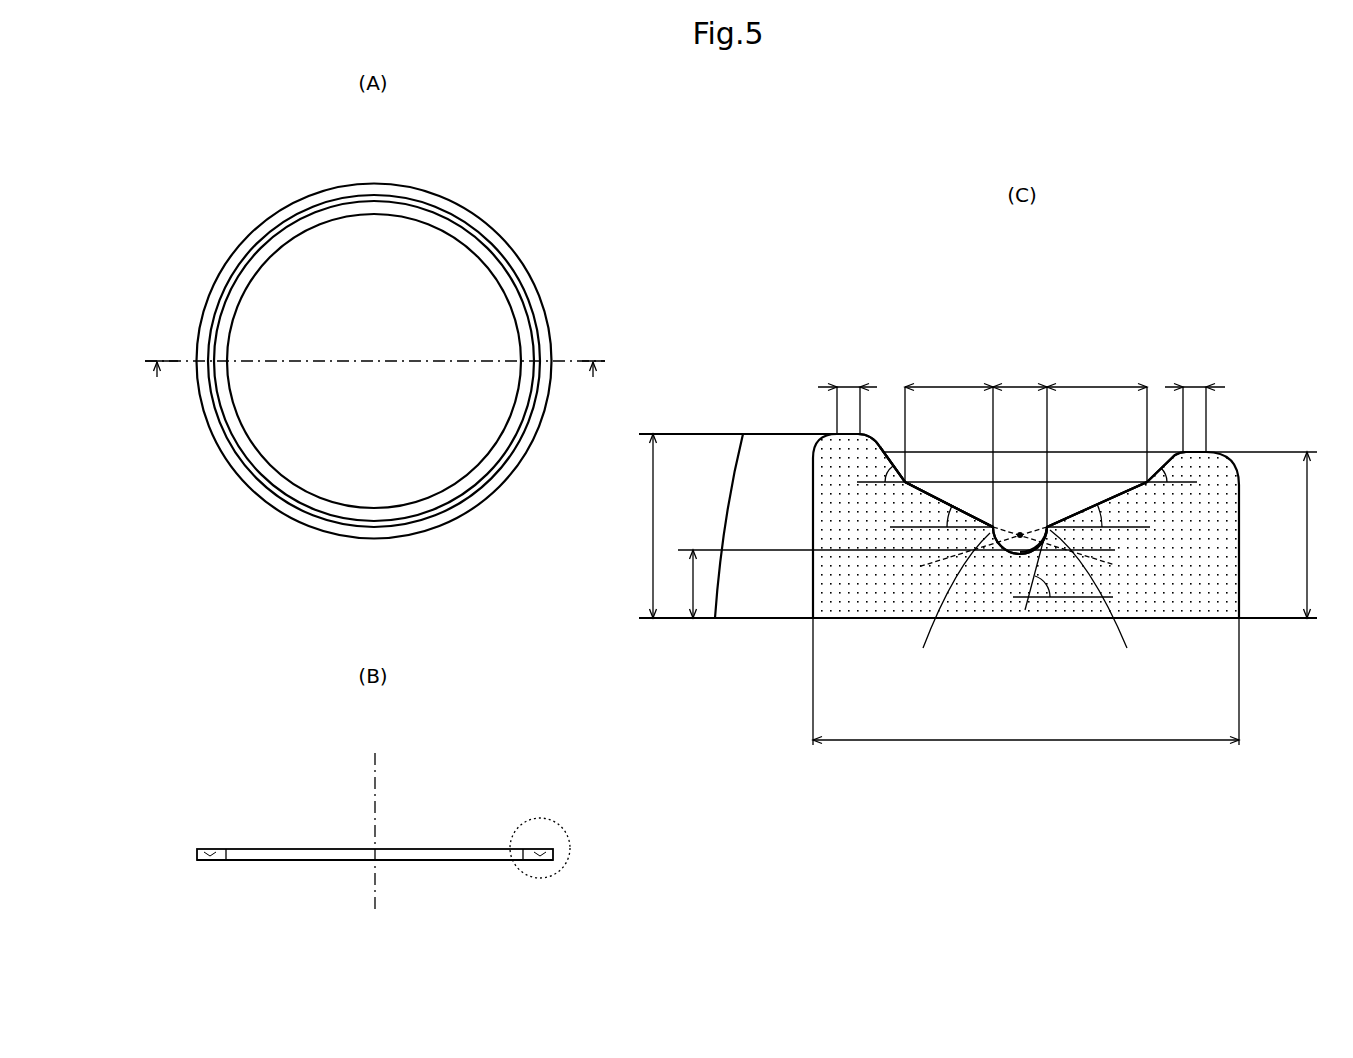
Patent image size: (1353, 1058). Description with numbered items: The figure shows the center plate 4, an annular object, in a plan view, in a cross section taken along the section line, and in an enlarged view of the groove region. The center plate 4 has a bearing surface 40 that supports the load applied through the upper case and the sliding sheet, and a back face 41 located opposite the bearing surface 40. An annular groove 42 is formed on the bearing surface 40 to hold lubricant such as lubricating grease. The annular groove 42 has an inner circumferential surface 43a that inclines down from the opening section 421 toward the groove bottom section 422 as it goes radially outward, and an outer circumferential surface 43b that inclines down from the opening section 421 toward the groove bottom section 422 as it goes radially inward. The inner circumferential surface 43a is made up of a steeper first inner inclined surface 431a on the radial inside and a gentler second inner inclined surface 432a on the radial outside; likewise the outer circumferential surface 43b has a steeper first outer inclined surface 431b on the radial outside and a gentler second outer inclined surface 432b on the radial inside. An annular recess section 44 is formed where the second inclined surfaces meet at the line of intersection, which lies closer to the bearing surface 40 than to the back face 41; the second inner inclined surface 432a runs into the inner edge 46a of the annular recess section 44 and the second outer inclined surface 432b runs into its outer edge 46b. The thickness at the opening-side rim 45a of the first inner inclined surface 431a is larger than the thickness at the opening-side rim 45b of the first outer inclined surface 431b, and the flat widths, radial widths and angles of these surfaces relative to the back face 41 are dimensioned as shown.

The center plate 4 is at (602, 148).
The bearing surface 40 is at (534, 288).
The back face 41 is at (350, 862).
The annular groove 42 is at (270, 237).
The inner circumferential surface 43a is at (255, 262).
The outer circumferential surface 43b is at (285, 212).
The annular recess section 44 is at (376, 527).
The opening section 421 is at (888, 430).
The groove bottom section 422 is at (1040, 518).
The first inner inclined surface 431a is at (907, 480).
The second inner inclined surface 432a is at (943, 505).
The first outer inclined surface 431b is at (1152, 476).
The second outer inclined surface 432b is at (1112, 500).
The opening-side rim 45a is at (843, 433).
The opening-side rim 45b is at (1193, 452).
The inner edge 46a is at (939, 603).
The outer edge 46b is at (1109, 602).